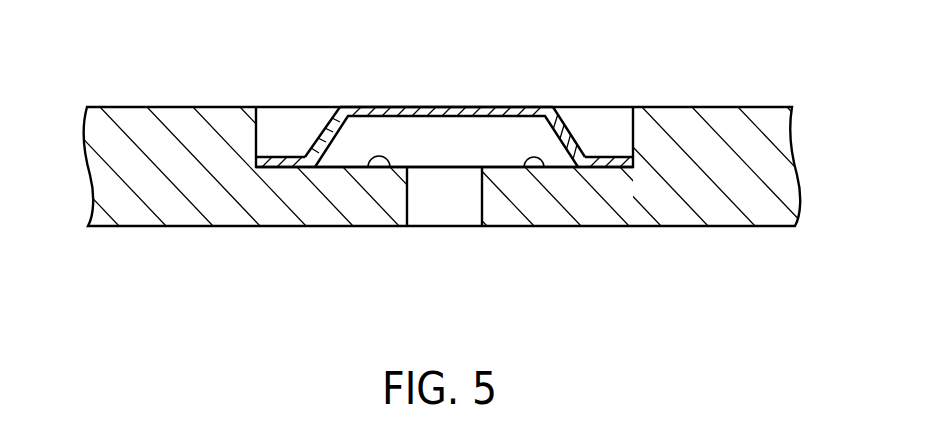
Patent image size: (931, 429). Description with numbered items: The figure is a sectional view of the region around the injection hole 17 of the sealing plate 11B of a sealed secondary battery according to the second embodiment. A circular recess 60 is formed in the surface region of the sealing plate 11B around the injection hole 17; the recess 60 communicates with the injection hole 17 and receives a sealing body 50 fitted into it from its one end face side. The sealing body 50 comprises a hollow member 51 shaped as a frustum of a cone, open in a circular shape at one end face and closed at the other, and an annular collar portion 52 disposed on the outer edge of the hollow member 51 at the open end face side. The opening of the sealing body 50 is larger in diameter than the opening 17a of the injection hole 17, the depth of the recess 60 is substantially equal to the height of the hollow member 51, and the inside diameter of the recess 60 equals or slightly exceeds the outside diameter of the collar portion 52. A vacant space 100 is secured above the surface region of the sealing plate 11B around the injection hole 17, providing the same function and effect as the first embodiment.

The sealing plate 11B is at (723, 108).
The injection hole 17 is at (443, 220).
The opening of the injection hole 17a is at (442, 168).
The vacant space 100 is at (368, 170).
The sealing body 50 is at (350, 94).
The hollow member 51 is at (499, 108).
The collar portion 52 is at (603, 157).
The recess 60 is at (258, 136).